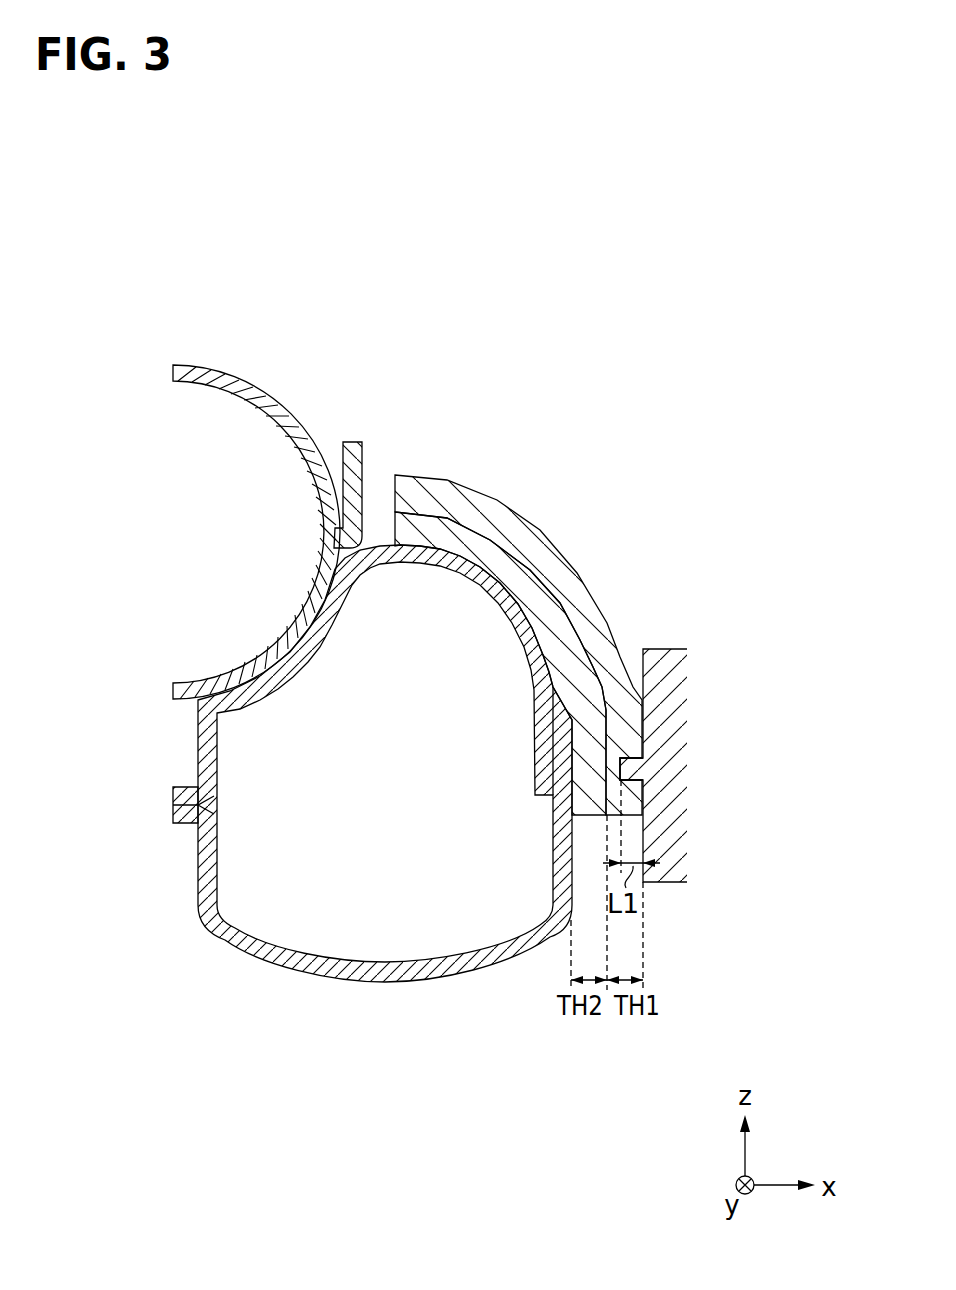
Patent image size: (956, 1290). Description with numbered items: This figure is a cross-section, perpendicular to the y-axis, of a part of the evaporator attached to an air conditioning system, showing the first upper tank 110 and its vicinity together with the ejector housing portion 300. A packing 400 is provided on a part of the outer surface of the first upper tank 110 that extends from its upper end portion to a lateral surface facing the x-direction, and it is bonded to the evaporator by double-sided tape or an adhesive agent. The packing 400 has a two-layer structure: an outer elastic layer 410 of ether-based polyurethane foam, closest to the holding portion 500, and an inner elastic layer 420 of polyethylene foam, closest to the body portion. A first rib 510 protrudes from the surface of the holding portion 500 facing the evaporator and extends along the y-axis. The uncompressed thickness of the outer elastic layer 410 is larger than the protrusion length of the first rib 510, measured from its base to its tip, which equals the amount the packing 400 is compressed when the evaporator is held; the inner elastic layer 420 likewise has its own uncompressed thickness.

The first upper tank 110 is at (372, 973).
The ejector housing portion 300 is at (245, 370).
The packing 400 is at (518, 574).
The outer elastic layer 410 is at (622, 378).
The inner elastic layer 420 is at (500, 565).
The holding portion 500 is at (724, 736).
The first rib 510 is at (630, 768).